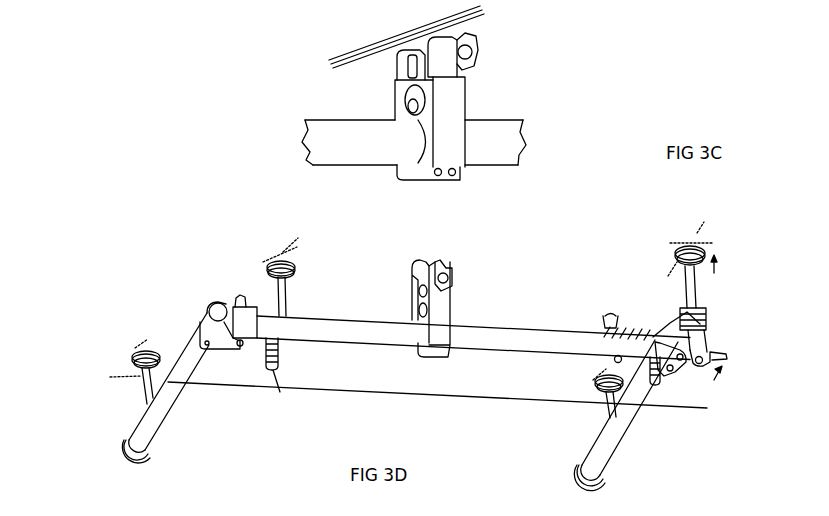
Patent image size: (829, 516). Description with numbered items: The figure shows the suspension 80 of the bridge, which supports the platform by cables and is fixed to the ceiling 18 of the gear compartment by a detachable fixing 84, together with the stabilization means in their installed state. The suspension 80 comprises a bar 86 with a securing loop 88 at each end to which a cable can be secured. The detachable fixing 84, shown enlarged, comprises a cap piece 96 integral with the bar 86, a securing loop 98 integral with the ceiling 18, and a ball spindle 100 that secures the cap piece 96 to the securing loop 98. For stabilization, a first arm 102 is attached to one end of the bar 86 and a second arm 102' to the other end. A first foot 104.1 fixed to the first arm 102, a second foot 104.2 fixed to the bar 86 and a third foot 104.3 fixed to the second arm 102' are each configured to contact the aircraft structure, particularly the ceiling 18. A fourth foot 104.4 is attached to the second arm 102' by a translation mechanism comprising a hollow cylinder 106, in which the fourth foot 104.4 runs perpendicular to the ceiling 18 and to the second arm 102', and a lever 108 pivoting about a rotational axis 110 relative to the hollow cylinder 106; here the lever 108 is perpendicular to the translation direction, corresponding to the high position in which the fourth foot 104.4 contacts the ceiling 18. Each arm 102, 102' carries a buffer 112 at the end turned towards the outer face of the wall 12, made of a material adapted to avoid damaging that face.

In FIG. 3D, the wall 12 is at (101, 420).
In FIG. 3D, the ceiling 18 is at (170, 300).
In FIG. 3D, the suspension 80 is at (188, 213).
In FIG. 3C, the detachable fixing 84 is at (476, 96).
In FIG. 3C, the bar 86 is at (347, 157).
In FIG. 3D, the bar 86 is at (505, 338).
In FIG. 3D, the securing loop 88 is at (279, 380).
In FIG. 3C, the cap piece 96 is at (390, 67).
In FIG. 3D, the cap piece 96 is at (410, 303).
In FIG. 3C, the securing loop 98 is at (390, 53).
In FIG. 3D, the securing loop 98 is at (453, 267).
In FIG. 3C, the ball spindle 100 is at (482, 32).
In FIG. 3D, the ball spindle 100 is at (437, 256).
In FIG. 3D, the first arm 102 is at (173, 381).
In FIG. 3D, the second arm 102' is at (630, 407).
In FIG. 3D, the first foot 104.1 is at (137, 388).
In FIG. 3D, the second foot 104.2 is at (297, 276).
In FIG. 3D, the third foot 104.3 is at (603, 413).
In FIG. 3D, the fourth foot 104.4 is at (703, 298).
In FIG. 3D, the hollow cylinder 106 is at (707, 328).
In FIG. 3D, the lever 108 is at (727, 356).
In FIG. 3D, the rotational axis 110 is at (712, 372).
In FIG. 3D, the buffer 112 is at (130, 455).